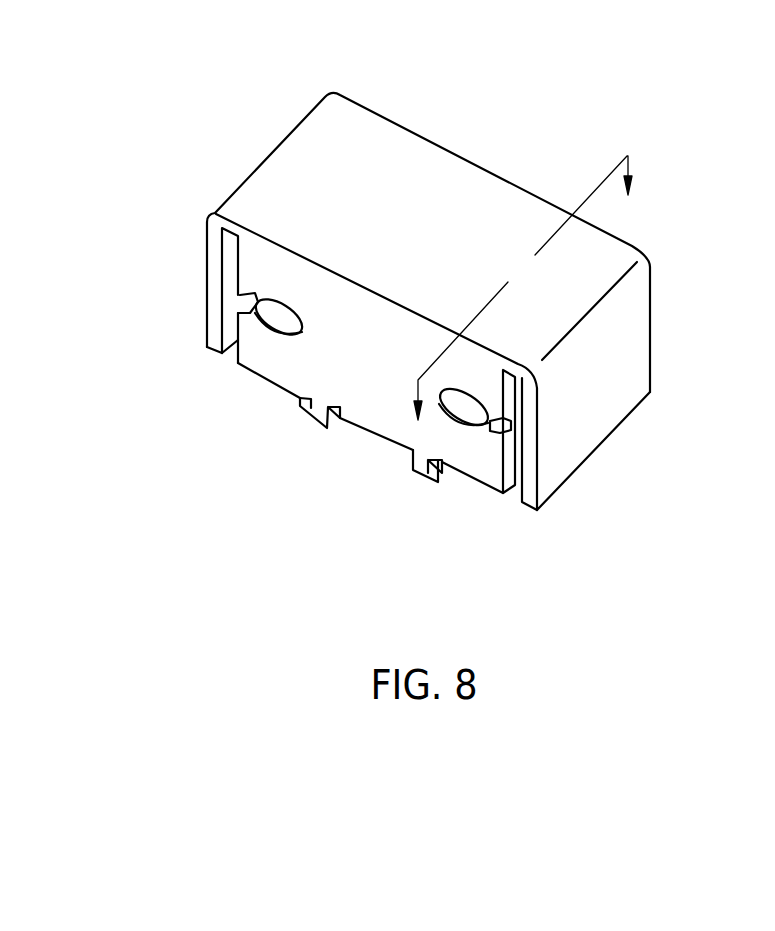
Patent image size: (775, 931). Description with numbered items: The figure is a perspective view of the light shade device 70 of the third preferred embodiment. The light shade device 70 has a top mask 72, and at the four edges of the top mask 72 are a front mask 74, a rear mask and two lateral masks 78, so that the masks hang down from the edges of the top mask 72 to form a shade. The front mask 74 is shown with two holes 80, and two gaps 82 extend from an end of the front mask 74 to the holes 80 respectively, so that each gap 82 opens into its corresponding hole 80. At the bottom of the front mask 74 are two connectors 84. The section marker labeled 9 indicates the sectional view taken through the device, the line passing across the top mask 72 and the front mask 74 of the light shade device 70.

The light shade device 70 is at (422, 291).
The top mask 72 is at (407, 172).
The front mask 74 is at (327, 360).
The lateral masks 78 is at (212, 259).
The holes 80 is at (278, 328).
The gaps 82 is at (247, 302).
The connectors 84 is at (313, 425).
The section line for FIG. 9 is at (517, 267).